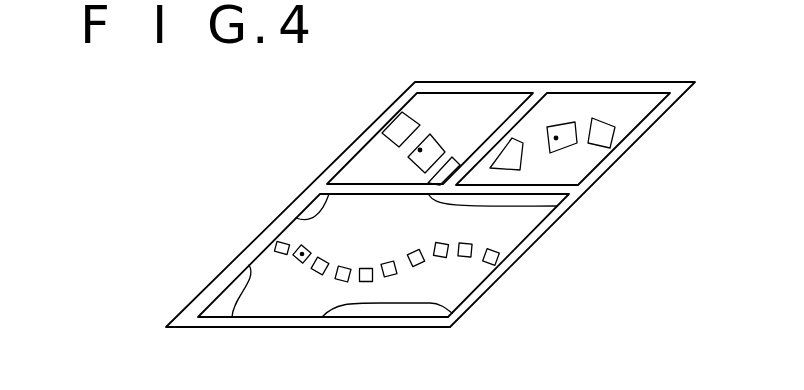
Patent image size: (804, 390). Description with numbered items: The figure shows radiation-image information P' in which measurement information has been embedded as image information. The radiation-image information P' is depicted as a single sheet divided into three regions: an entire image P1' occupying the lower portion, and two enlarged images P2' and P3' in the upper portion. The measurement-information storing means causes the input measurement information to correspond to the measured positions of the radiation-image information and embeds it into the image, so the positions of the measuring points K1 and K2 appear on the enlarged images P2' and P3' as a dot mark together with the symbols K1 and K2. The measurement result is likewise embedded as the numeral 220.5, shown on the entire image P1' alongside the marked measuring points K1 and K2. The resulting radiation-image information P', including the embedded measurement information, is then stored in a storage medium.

The radiation-image information P' is at (446, 204).
The entire image P1' is at (383, 277).
The enlarged image P2' is at (445, 102).
The enlarged image P3' is at (576, 102).
The measuring point K1 is at (425, 135).
The measuring point K2 is at (560, 122).
The measurement result 220.5 is at (386, 240).